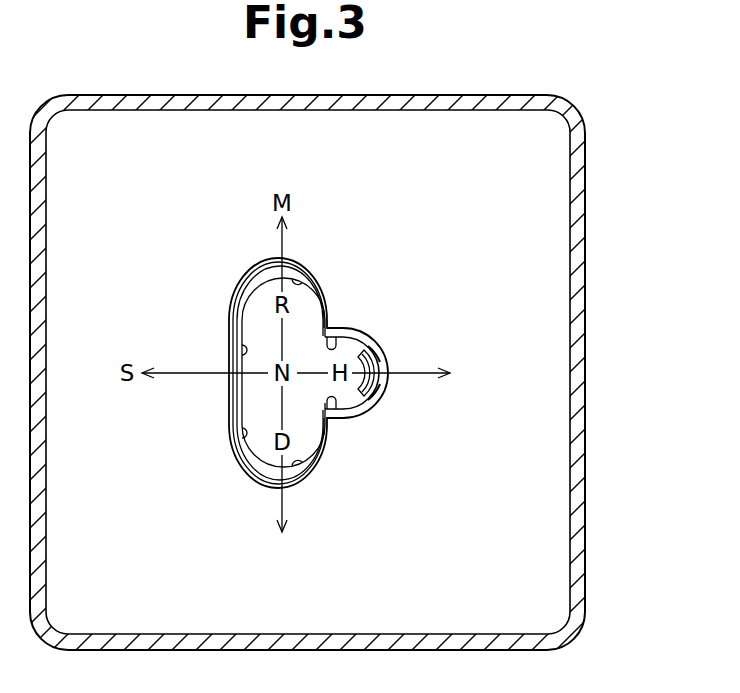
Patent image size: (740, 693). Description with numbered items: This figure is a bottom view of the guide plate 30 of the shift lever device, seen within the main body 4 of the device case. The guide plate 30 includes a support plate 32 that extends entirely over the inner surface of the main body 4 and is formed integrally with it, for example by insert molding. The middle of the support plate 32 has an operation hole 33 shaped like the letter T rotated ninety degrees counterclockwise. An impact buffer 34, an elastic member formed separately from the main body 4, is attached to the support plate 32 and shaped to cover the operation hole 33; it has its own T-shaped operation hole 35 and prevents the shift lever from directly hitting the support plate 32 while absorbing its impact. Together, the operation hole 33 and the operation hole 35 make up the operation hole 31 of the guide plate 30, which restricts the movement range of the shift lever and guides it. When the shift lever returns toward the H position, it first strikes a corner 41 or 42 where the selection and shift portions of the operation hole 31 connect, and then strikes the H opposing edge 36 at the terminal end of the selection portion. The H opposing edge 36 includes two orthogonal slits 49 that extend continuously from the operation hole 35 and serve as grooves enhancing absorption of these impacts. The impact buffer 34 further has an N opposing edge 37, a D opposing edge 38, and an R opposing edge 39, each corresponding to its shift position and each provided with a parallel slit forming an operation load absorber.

The main body 4 is at (585, 176).
The guide plate 30 is at (370, 372).
The support plate 32 is at (585, 253).
The impact buffer 34 is at (325, 300).
The operation hole 31 is at (258, 373).
The operation hole 33 is at (231, 414).
The operation hole 35 is at (240, 435).
The H opposing edge 36 is at (360, 386).
The N opposing edge 37 is at (242, 350).
The D opposing edge 38 is at (297, 285).
The R opposing edge 39 is at (296, 467).
The corner 41 is at (333, 409).
The corner 42 is at (333, 343).
The orthogonal slits 49 is at (377, 341).